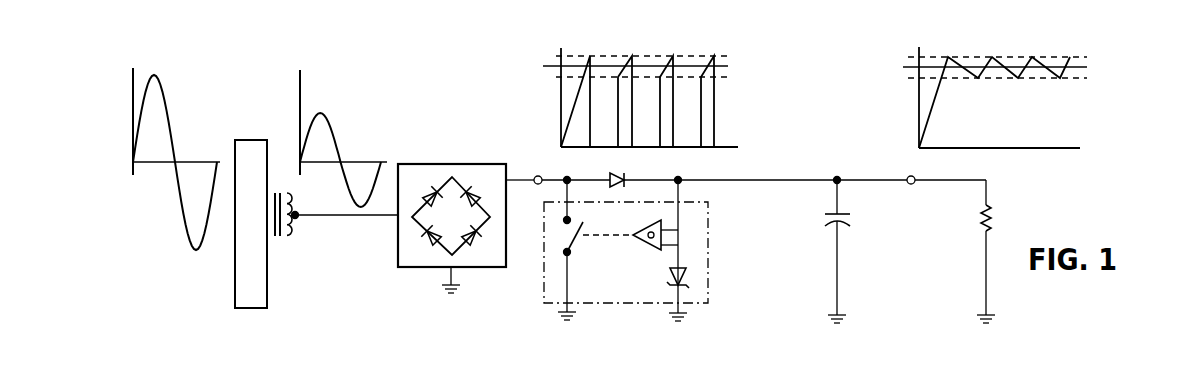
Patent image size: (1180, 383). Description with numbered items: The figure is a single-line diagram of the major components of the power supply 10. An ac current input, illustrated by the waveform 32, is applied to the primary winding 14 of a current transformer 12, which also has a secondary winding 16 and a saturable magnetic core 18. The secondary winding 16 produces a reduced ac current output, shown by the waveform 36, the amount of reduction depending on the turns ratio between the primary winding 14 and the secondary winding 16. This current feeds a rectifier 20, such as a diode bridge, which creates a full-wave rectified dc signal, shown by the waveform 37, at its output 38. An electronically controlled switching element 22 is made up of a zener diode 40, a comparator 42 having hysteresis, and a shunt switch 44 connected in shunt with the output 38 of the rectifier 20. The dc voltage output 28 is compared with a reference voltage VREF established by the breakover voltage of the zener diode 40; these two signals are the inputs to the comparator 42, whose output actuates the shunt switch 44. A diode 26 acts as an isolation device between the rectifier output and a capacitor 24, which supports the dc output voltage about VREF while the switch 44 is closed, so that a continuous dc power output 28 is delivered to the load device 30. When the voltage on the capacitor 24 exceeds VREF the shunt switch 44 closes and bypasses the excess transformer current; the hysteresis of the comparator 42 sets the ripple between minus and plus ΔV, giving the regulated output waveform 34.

The power supply 10 is at (727, 334).
The current transformer 12 is at (291, 177).
The primary winding 14 is at (267, 290).
The secondary winding 16 is at (291, 229).
The saturable magnetic core 18 is at (278, 237).
The rectifier 20 is at (416, 267).
The electronically controlled switching element 22 is at (644, 250).
The capacitor 24 is at (850, 218).
The diode 26 is at (619, 173).
The dc power output 28 is at (910, 176).
The load device 30 is at (990, 212).
The ac current input 32 is at (162, 93).
The dc voltage output waveform 34 is at (955, 61).
The reduced ac current output 36 is at (330, 121).
The full-wave rectified dc signal 37 is at (592, 59).
The rectifier output 38 is at (538, 176).
The zener diode 40 is at (673, 283).
The comparator 42 is at (648, 225).
The shunt switch 44 is at (576, 236).